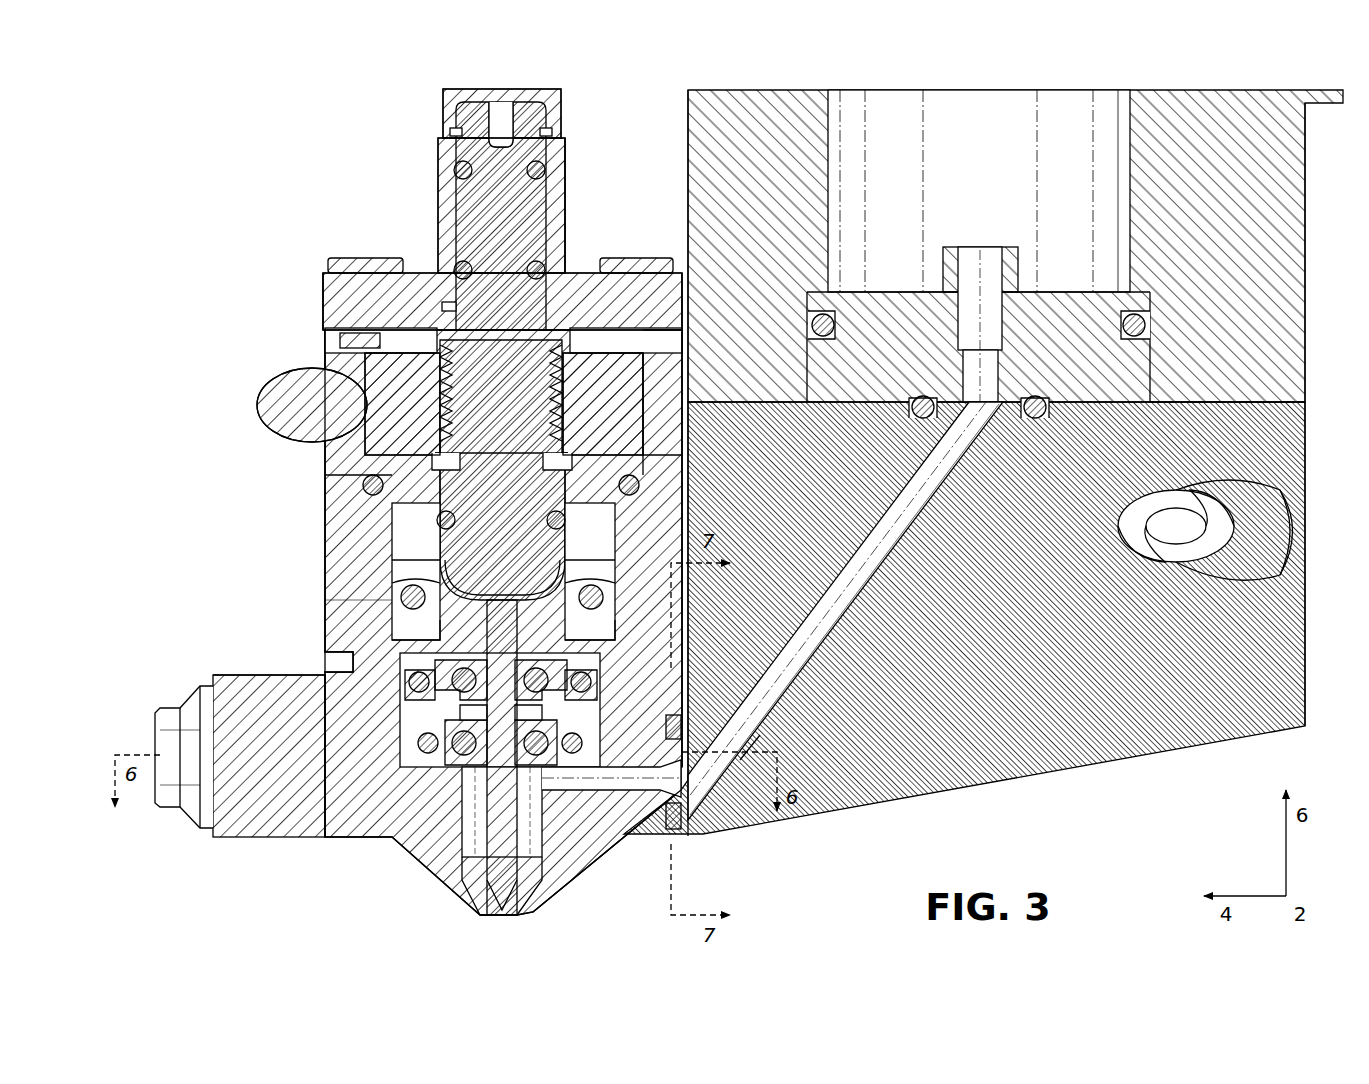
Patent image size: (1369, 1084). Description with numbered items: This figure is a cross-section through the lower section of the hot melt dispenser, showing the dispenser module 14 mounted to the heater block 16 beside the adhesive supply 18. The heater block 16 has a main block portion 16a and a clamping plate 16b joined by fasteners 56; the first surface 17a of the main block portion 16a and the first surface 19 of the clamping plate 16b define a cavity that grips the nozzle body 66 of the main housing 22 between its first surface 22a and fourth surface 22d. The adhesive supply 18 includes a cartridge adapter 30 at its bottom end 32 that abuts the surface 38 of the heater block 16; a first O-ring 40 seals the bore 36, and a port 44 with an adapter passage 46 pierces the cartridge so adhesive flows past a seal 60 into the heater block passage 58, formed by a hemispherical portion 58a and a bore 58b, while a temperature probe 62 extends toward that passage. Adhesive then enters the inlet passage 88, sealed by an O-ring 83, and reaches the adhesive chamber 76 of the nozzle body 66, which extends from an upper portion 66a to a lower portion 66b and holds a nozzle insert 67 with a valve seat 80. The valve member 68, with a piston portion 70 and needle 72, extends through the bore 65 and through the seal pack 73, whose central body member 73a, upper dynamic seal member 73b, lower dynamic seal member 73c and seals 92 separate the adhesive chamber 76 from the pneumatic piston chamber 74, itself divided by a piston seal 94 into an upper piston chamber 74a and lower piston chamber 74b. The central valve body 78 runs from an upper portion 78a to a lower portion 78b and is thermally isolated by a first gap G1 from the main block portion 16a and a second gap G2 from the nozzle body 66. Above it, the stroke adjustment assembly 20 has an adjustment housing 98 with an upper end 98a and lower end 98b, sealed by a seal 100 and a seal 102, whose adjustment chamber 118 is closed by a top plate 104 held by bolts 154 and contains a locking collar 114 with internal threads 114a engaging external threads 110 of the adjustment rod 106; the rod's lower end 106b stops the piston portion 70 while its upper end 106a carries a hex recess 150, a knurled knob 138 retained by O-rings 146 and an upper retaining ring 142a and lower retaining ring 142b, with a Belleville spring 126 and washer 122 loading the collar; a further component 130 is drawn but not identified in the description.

The dispenser module 14 is at (320, 260).
The heater block 16 is at (1086, 748).
The main block portion 16a is at (1245, 652).
The clamping plate 16b is at (268, 678).
The first surface 17a is at (655, 850).
The adhesive supply 18 is at (1220, 104).
The first surface 19 is at (335, 808).
The stroke adjustment assembly 20 is at (436, 162).
The main housing 22 is at (324, 340).
The first surface 22a is at (690, 845).
The fourth surface 22d is at (324, 746).
The cartridge adapter 30 is at (1098, 290).
The bottom end 32 is at (1282, 400).
The bore 36 is at (1075, 125).
The surface 38 is at (1192, 395).
The first O-ring 40 is at (1140, 315).
The port 44 is at (1012, 250).
The adapter passage 46 is at (985, 235).
The fasteners 56 is at (200, 688).
The heater block passage 58 is at (855, 590).
The hemispherical portion 58a is at (990, 400).
The bore 58b is at (760, 705).
The seal 60 is at (975, 360).
The temperature probe 62 is at (1240, 530).
The bore 65 is at (345, 590).
The nozzle body 66 is at (355, 840).
The upper portion 66a is at (326, 678).
The lower portion 66b is at (558, 905).
The nozzle insert 67 is at (518, 924).
The valve member 68 is at (495, 900).
The piston portion 70 is at (400, 560).
The needle 72 is at (470, 840).
The seal pack 73 is at (438, 702).
The central body member 73a is at (584, 712).
The upper dynamic seal member 73b is at (584, 688).
The lower dynamic seal member 73c is at (582, 742).
The pneumatic piston chamber 74 is at (440, 520).
The upper piston chamber 74a is at (562, 520).
The lower piston chamber 74b is at (606, 650).
The adhesive chamber 76 is at (450, 870).
The central valve body 78 is at (350, 545).
The upper portion 78a is at (364, 482).
The lower portion 78b is at (340, 648).
The valve seat 80 is at (490, 918).
The O-ring 83 is at (690, 838).
The inlet passage 88 is at (632, 780).
The seals 92 is at (412, 684).
The piston seal 94 is at (600, 604).
The adjustment housing 98 is at (668, 365).
The upper end 98a is at (684, 320).
The lower end 98b is at (668, 408).
The seal 100 is at (625, 515).
The seal 102 is at (546, 515).
The top plate 104 is at (322, 300).
The adjustment rod 106 is at (501, 470).
The upper end 106a is at (550, 198).
The lower end 106b is at (502, 574).
The external threads 110 is at (548, 440).
The locking collar 114 is at (402, 404).
The internal threads 114a is at (546, 358).
The adjustment chamber 118 is at (684, 290).
The washer 122 is at (582, 325).
The Belleville spring 126 is at (405, 330).
The adjustment knob 130 is at (262, 392).
The knurled knob 138 is at (562, 238).
The upper retaining ring 142a is at (548, 128).
The lower retaining ring 142b is at (446, 302).
The O-rings 146 is at (545, 165).
The hex recess 150 is at (496, 100).
The bolts 154 is at (365, 256).
The first gap G1 is at (640, 485).
The second gap G2 is at (362, 690).